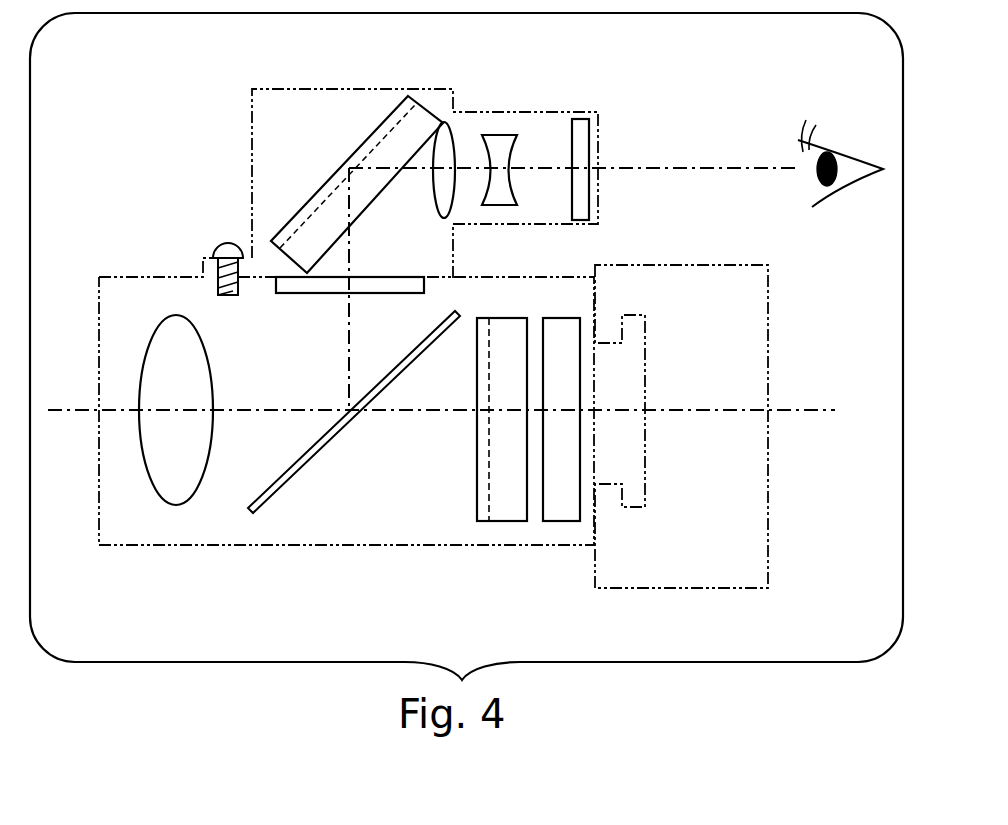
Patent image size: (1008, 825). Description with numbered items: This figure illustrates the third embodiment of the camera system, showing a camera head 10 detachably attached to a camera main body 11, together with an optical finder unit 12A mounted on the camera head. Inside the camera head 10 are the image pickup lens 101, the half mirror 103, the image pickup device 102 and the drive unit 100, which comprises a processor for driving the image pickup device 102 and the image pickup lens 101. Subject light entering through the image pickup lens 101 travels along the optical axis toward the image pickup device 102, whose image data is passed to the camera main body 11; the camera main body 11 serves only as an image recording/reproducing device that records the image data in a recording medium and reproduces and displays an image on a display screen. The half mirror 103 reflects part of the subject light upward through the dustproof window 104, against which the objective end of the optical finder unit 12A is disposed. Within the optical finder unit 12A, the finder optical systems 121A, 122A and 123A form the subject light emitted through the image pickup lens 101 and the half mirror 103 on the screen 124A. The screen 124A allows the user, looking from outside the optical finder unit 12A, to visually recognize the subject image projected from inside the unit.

The camera head 10 is at (298, 545).
The camera main body 11 is at (753, 495).
The optical finder unit 12A is at (248, 178).
The drive unit 100 is at (558, 522).
The image pickup lens 101 is at (183, 482).
The image pickup device 102 is at (498, 522).
The half mirror 103 is at (320, 450).
The dustproof window 104 is at (289, 290).
The finder optical system 121A is at (357, 222).
The finder optical system 122A is at (446, 198).
The finder optical system 123A is at (500, 188).
The screen 124A is at (583, 203).